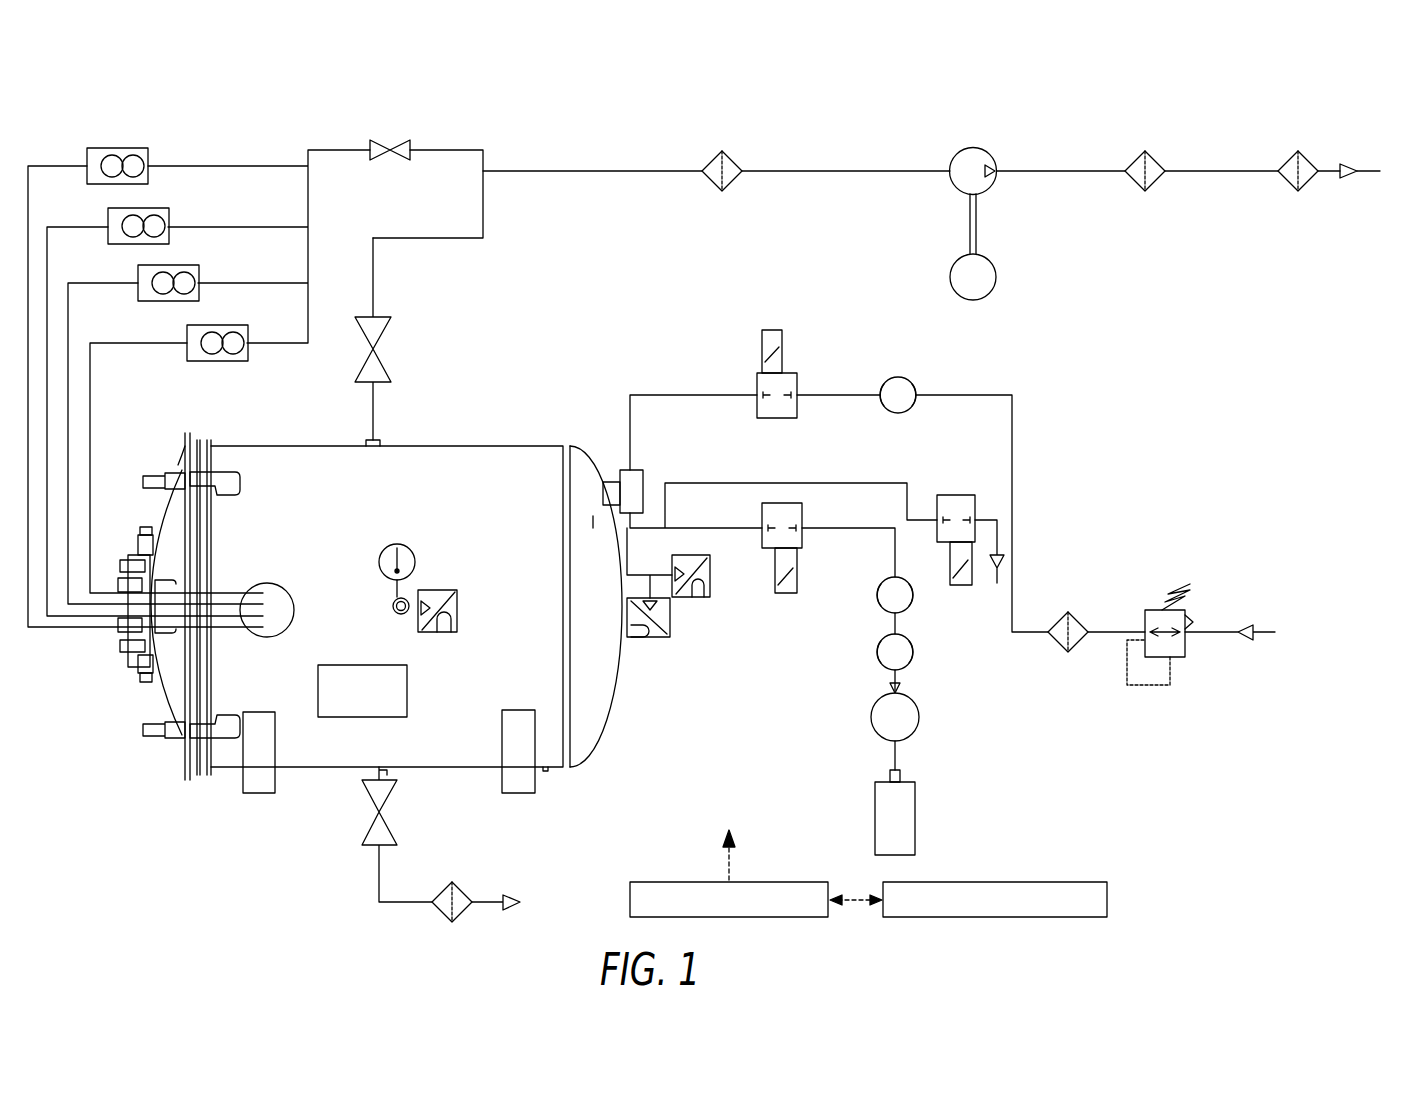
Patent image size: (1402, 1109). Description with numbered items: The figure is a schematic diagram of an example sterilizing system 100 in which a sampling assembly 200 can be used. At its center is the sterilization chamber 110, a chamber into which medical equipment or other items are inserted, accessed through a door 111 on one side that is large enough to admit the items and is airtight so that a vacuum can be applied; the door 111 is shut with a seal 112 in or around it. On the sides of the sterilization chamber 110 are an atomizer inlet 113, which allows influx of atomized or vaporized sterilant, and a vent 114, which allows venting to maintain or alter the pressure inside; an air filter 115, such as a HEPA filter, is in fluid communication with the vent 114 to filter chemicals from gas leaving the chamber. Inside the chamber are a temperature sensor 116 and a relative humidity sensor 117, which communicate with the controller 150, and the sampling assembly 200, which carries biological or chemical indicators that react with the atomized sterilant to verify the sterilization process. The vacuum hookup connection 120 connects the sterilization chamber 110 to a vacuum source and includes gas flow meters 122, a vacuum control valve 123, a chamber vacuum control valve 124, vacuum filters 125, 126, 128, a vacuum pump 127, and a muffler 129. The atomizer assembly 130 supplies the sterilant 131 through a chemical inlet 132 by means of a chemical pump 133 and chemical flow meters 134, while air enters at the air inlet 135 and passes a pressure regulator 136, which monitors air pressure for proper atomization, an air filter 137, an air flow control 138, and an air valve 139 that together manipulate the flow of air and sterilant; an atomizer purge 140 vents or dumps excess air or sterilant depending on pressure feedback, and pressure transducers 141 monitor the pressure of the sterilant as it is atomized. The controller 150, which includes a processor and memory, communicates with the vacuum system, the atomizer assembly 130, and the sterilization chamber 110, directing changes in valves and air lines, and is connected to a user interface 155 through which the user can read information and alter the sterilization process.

The sterilizing system 100 is at (97, 102).
The sterilization chamber 110 is at (515, 482).
The door 111 is at (170, 695).
The seal 112 is at (195, 788).
The atomizer inlet 113 is at (600, 470).
The vent 114 is at (375, 772).
The air filter 115 is at (470, 877).
The temperature sensor 116 is at (417, 562).
The relative humidity sensor 117 is at (459, 610).
The vacuum hookup connection 120 is at (295, 611).
The gas flow meters 122 is at (138, 148).
The vacuum control valve 123 is at (402, 158).
The chamber vacuum control valve 124 is at (368, 317).
The vacuum filter 125 is at (711, 162).
The vacuum filter 126 is at (1135, 162).
The vacuum pump 127 is at (961, 155).
The vacuum filter 128 is at (1288, 162).
The muffler 129 is at (1354, 164).
The atomizer assembly 130 is at (691, 326).
The sterilant 131 is at (875, 820).
The chemical inlet 132 is at (901, 775).
The chemical pump 133 is at (920, 718).
The chemical flow meters 134 is at (877, 597).
The air inlet 135 is at (1246, 632).
The pressure regulator 136 is at (1152, 610).
The air filter 137 is at (1058, 624).
The air flow control 138 is at (905, 372).
The air valve 139 is at (790, 325).
The atomizer purge 140 is at (965, 492).
The pressure transducers 141 is at (690, 598).
The controller 150 is at (655, 882).
The user interface 155 is at (1113, 875).
The sampling assembly 200 is at (380, 704).